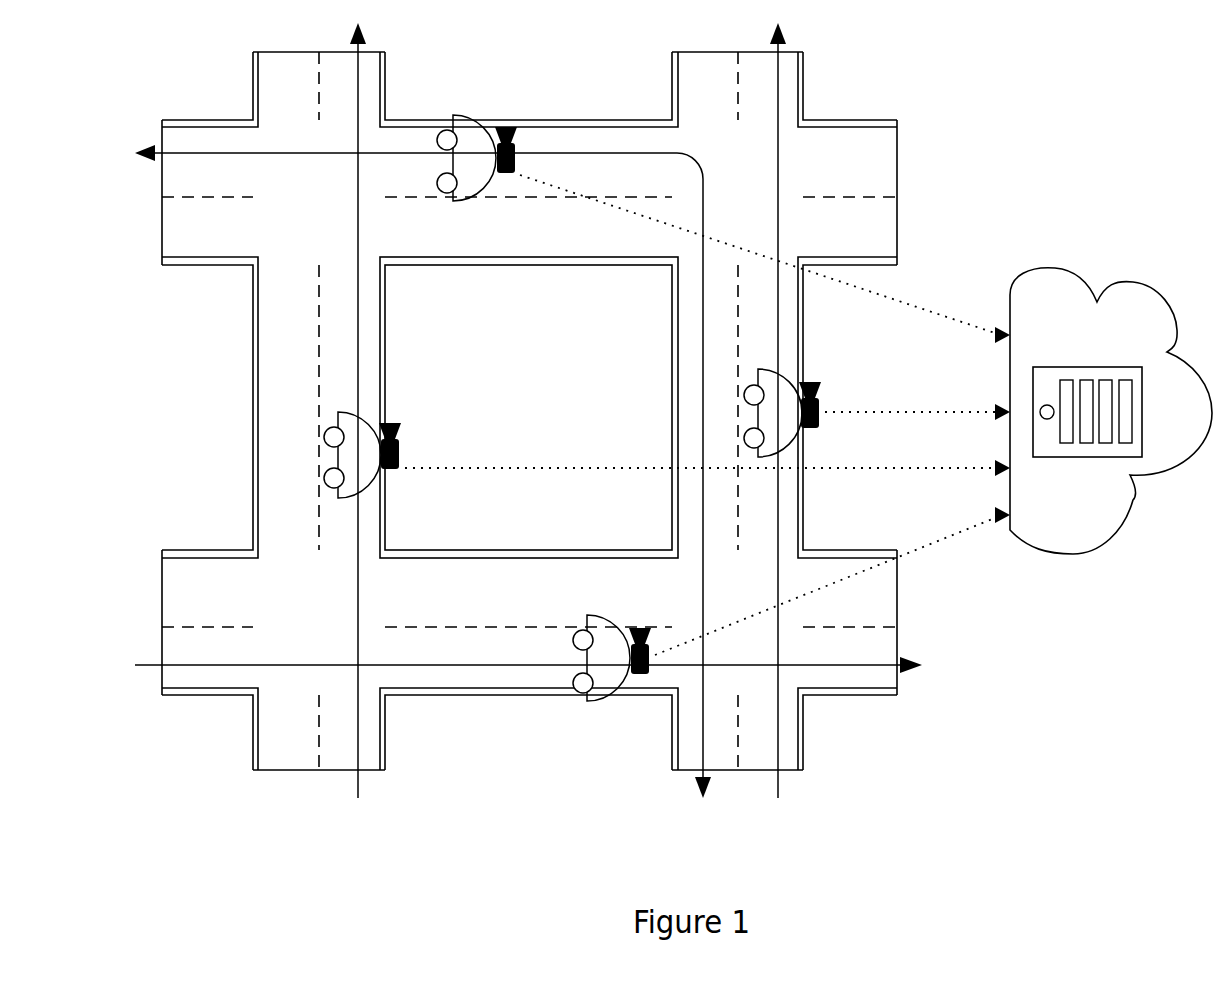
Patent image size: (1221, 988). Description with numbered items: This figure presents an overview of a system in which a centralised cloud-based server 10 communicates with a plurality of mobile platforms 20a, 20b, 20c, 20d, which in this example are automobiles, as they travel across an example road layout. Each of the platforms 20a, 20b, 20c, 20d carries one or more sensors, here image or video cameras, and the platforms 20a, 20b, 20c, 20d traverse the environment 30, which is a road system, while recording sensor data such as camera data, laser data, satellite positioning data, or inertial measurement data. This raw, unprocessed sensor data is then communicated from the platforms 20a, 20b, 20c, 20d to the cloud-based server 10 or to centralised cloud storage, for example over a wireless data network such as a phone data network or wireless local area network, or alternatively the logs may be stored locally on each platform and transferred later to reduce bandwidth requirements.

The cloud-based server 10 is at (1077, 270).
The platform 20a is at (477, 120).
The platform 20b is at (338, 460).
The platform 20c is at (758, 412).
The platform 20d is at (593, 703).
The environment 30 is at (235, 247).